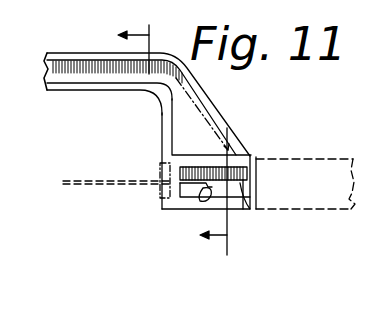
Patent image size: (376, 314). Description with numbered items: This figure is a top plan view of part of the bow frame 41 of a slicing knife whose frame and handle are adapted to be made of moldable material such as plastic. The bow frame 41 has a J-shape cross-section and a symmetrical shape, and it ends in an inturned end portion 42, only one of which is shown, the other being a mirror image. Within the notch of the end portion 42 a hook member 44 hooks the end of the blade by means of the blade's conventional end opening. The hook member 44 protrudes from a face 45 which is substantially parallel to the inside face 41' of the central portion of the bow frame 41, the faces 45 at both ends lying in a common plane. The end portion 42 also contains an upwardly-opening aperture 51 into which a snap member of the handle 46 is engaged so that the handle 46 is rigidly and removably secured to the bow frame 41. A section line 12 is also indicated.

The section line 12- 12 is at (186, 137).
The bow frame 41 is at (147, 79).
The inside face of central portion of the bow frame 41' is at (101, 104).
The inturned end portion 42 is at (186, 122).
The hook member 44 is at (203, 186).
The face 45 is at (251, 209).
The handle 46 is at (338, 203).
The upwardly-opening aperture 51 is at (208, 193).